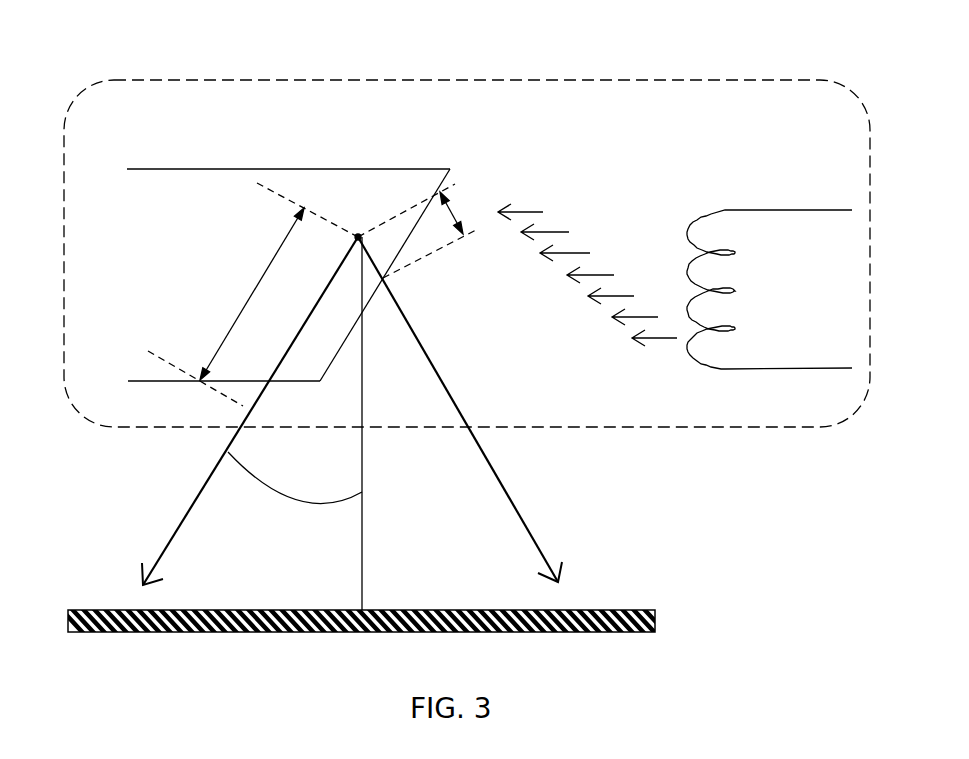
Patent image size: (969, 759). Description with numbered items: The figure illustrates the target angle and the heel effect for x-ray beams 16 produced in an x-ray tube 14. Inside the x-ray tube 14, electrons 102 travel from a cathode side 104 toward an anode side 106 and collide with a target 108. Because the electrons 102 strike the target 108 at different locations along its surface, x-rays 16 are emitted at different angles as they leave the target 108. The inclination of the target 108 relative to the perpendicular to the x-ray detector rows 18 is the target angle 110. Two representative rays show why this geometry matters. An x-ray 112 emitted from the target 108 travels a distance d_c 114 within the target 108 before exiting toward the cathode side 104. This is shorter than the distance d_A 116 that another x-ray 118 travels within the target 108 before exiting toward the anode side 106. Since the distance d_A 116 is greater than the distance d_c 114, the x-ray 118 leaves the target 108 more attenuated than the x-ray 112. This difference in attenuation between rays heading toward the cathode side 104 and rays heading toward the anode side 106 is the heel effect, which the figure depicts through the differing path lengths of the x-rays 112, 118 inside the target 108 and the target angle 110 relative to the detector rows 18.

The x-ray tube 14 is at (490, 78).
The x-ray beams 16 is at (202, 487).
The x-ray detector rows 18 is at (602, 600).
The electrons 102 is at (588, 215).
The cathode side 104 is at (777, 205).
The anode side 106 is at (310, 165).
The target 108 is at (455, 168).
The target angle 110 is at (315, 500).
The x-ray 112 is at (541, 547).
The distance d_c 114 is at (431, 240).
The distance d_A 116 is at (218, 270).
The x-ray 118 is at (163, 547).